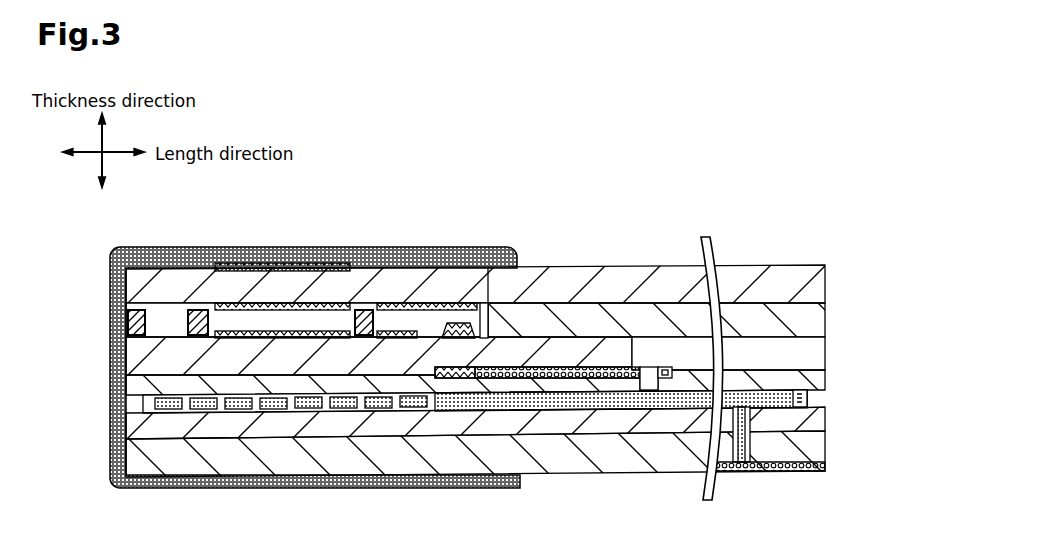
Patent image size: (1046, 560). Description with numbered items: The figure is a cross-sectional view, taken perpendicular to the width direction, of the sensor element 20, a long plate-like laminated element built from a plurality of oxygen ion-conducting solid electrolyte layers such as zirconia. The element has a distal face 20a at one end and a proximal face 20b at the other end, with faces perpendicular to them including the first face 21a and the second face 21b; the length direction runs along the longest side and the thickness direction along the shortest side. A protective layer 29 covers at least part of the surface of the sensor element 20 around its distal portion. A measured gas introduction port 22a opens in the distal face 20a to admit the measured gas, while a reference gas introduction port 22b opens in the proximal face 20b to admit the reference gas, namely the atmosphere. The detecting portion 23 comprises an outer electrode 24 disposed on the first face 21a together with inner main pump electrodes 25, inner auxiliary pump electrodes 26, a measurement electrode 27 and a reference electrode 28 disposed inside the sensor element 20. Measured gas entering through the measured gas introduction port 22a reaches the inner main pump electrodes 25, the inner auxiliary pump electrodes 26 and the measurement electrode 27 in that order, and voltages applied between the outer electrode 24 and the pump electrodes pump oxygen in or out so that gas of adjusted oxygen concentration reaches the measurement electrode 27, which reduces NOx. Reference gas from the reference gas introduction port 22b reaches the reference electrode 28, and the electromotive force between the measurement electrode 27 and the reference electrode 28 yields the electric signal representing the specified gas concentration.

The sensor element 20 is at (727, 191).
The distal face 20a is at (125, 388).
The proximal face 20b is at (823, 375).
The first face 21a is at (613, 265).
The second face 21b is at (607, 473).
The measured gas introduction port 22a is at (125, 326).
The reference gas introduction port 22b is at (823, 352).
The detecting portion 23 is at (441, 199).
The outer electrode 24 is at (232, 263).
The inner main pump electrodes 25 is at (292, 331).
The inner auxiliary pump electrodes 26 is at (405, 331).
The measurement electrode 27 is at (455, 323).
The reference electrode 28 is at (489, 266).
The protective layer 29 is at (113, 290).